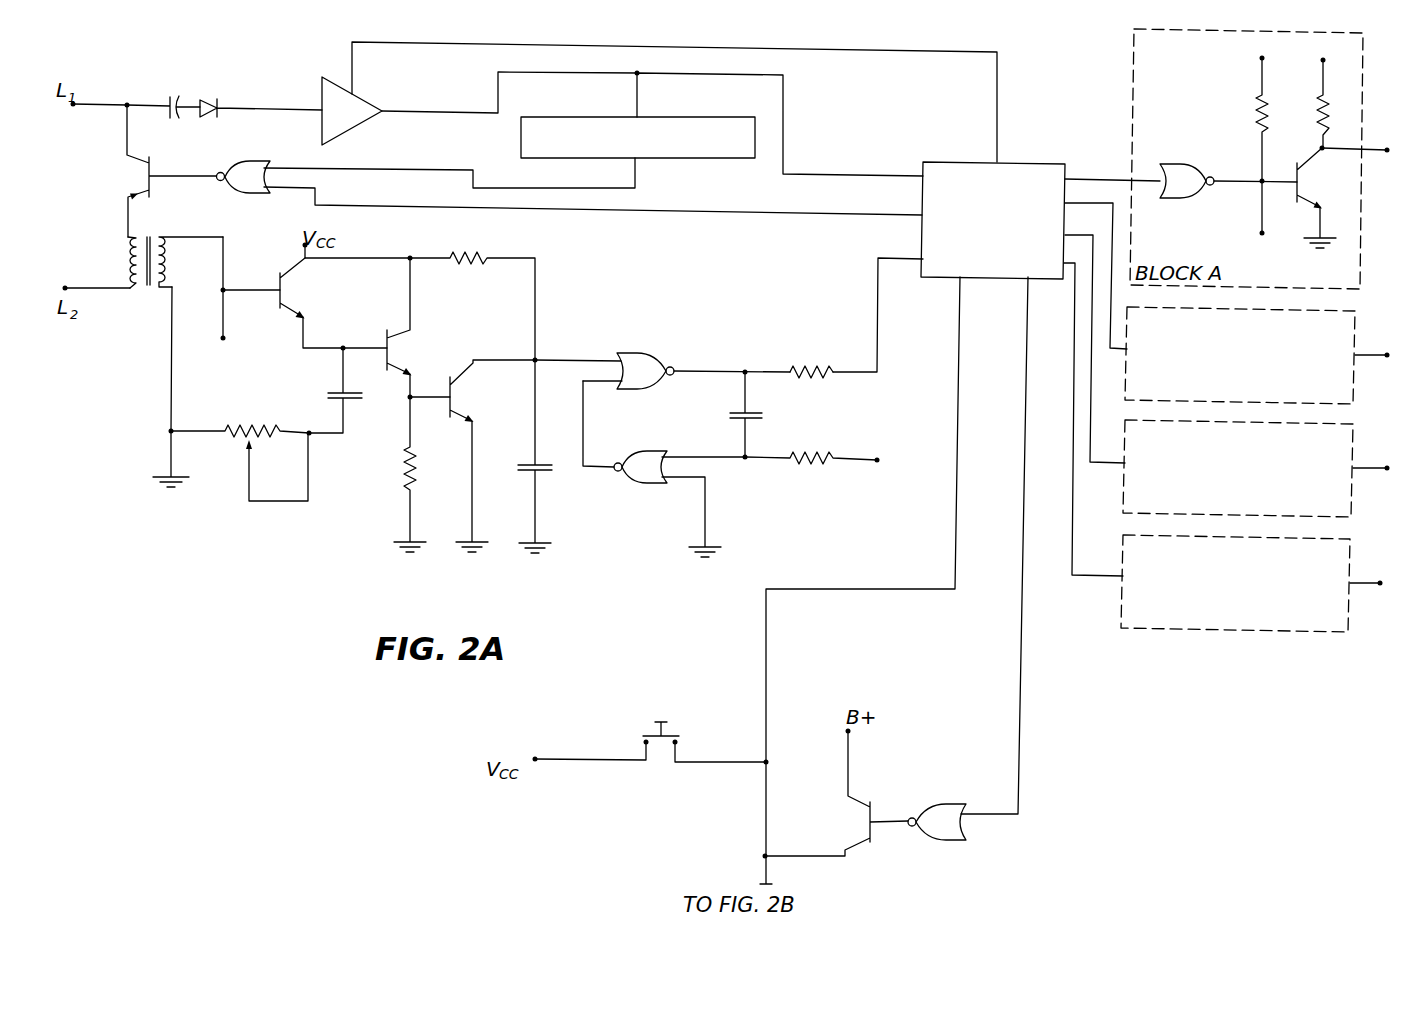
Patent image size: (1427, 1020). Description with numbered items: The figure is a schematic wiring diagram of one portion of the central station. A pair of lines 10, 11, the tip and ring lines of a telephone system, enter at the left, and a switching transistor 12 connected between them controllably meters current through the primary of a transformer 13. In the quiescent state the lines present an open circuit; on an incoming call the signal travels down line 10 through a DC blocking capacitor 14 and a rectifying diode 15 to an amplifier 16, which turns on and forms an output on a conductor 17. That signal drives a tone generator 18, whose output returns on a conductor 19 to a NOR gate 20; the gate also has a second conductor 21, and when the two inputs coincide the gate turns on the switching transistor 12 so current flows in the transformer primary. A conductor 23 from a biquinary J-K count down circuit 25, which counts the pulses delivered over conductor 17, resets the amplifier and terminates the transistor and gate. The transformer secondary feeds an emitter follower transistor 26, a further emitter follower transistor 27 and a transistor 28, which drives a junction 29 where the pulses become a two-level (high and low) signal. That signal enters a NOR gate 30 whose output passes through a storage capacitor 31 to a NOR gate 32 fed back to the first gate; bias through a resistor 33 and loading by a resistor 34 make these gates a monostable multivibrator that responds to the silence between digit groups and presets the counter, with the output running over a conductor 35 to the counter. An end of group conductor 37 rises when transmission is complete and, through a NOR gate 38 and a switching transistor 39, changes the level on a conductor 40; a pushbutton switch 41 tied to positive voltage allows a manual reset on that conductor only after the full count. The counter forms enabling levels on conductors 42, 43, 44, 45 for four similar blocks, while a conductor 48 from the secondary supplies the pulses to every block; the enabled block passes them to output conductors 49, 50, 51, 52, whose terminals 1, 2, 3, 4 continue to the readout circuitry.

The output terminal 1 is at (1403, 149).
The output terminal 2 is at (1401, 358).
The output terminal 3 is at (1401, 471).
The output terminal 4 is at (1396, 586).
The line 10 is at (103, 101).
The line 11 is at (80, 287).
The switching transistor 12 is at (154, 161).
The transformer 13 is at (149, 237).
The DC blocking capacitor 14 is at (180, 95).
The rectifying diode 15 is at (208, 93).
The amplifier 16 is at (322, 84).
The conductor 17 is at (753, 75).
The tone generator 18 is at (727, 158).
The conductor 19 is at (388, 168).
The NOR gate 20 is at (242, 163).
The second conductor 21 is at (390, 205).
The conductor 23 is at (480, 45).
The biquinary J-K count down circuit 25 is at (1020, 162).
The emitter follower transistor 26 is at (291, 303).
The transistor 27 is at (398, 336).
The transistor 28 is at (462, 385).
The junction 29 is at (537, 357).
The NOR gate 30 is at (652, 350).
The storage capacitor 31 is at (757, 412).
The NOR gate 32 is at (648, 449).
The resistor 33 is at (818, 453).
The resistor 34 is at (803, 362).
The conductor to counter 35 is at (878, 323).
The conductor 37 is at (1021, 733).
The NOR gate 38 is at (952, 840).
The switching transistor 39 is at (874, 811).
The conductor 40 is at (766, 818).
The pushbutton switch 41 is at (672, 731).
The conductor 42 is at (1093, 177).
The conductor 43 is at (1082, 203).
The conductor 44 is at (1083, 220).
The conductor 45 is at (1072, 327).
The conductor 48 is at (1262, 233).
The conductor 49 is at (1371, 150).
The conductor 50 is at (1370, 352).
The conductor 51 is at (1368, 466).
The conductor 52 is at (1365, 582).